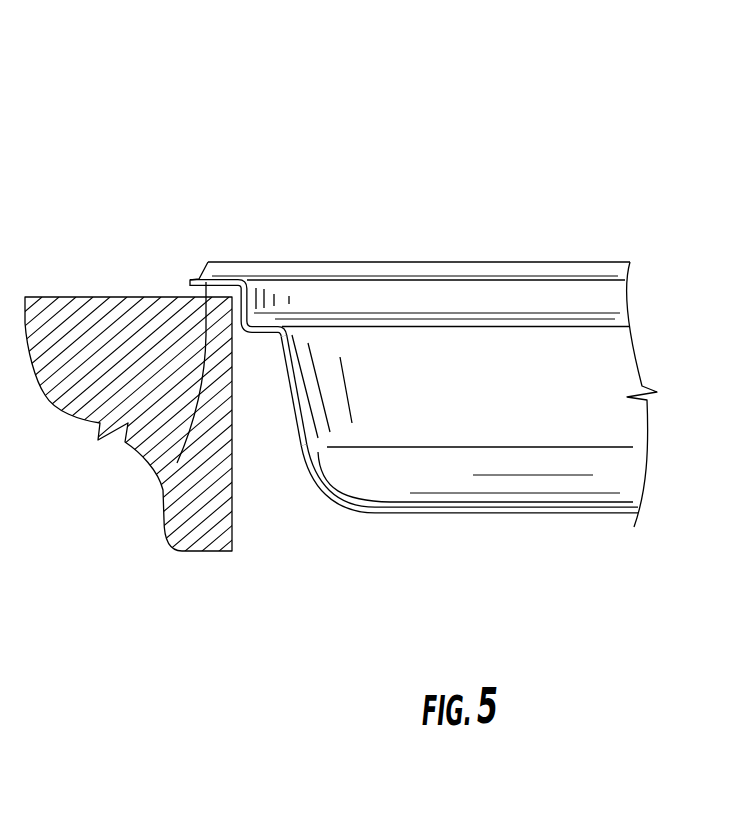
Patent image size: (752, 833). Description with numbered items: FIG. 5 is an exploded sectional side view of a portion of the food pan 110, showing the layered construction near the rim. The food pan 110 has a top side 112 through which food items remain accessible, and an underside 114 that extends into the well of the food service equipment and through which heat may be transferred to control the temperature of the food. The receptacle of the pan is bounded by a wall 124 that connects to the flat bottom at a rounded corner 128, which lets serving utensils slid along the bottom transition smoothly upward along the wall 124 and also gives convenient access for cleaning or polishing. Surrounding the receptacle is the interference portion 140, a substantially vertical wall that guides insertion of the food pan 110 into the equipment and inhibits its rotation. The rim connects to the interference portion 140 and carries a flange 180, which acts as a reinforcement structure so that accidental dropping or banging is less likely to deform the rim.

The top side 112 is at (364, 133).
The food pan 110 is at (493, 217).
The underside 114 is at (552, 549).
The wall 124 is at (596, 402).
The corner 128 is at (414, 486).
The interference portion 140 is at (234, 305).
The flange 180 is at (163, 489).